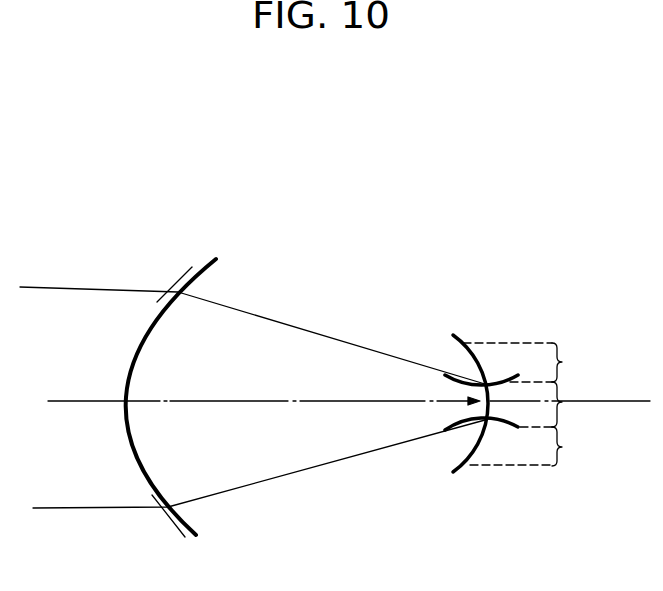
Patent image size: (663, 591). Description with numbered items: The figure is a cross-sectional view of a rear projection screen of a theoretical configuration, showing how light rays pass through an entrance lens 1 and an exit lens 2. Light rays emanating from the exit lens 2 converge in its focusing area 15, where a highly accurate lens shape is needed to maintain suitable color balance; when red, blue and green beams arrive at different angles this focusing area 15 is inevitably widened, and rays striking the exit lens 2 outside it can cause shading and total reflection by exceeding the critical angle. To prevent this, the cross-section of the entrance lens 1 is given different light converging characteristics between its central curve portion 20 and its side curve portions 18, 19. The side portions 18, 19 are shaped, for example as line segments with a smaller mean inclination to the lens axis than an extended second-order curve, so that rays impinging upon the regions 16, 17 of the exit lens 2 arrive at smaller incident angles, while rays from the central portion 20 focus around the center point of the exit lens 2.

The entrance lens 1 is at (148, 463).
The exit lens 2 is at (455, 471).
The focusing area 15 is at (562, 400).
The region of the exit lens 16 is at (562, 362).
The region of the exit lens 17 is at (562, 447).
The side curve portion 18 is at (172, 286).
The side curve portion 19 is at (163, 515).
The central curve portion 20 is at (128, 444).